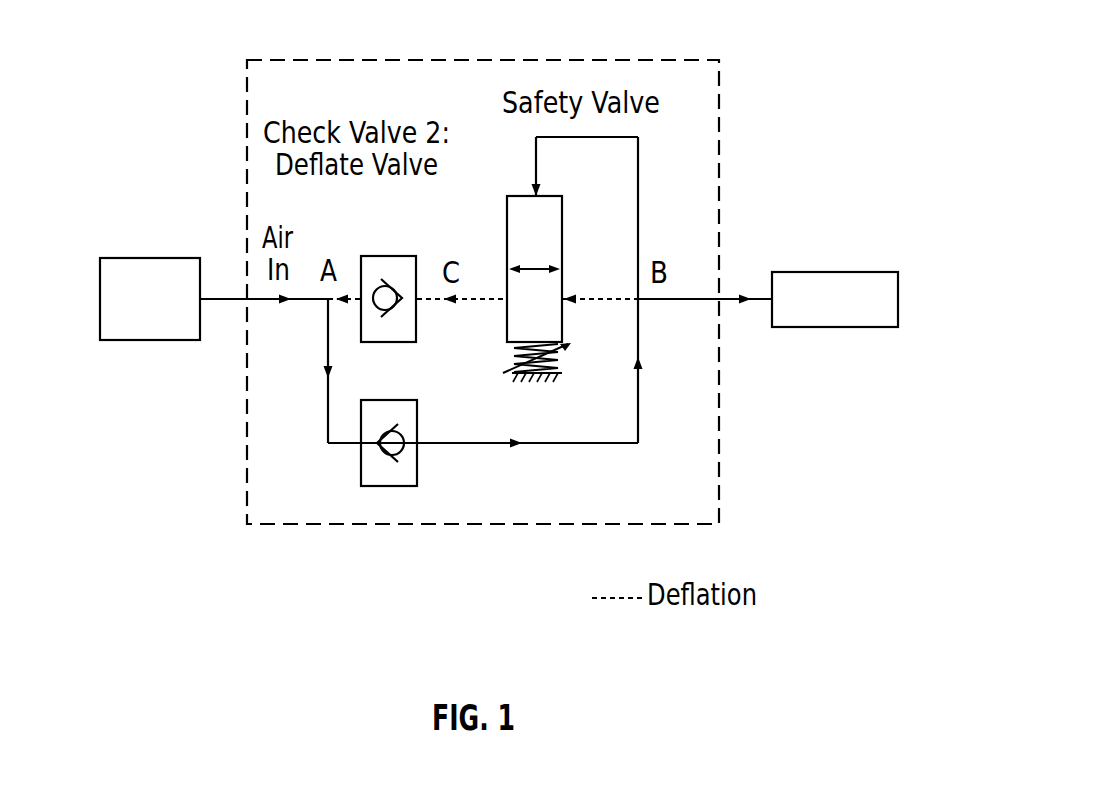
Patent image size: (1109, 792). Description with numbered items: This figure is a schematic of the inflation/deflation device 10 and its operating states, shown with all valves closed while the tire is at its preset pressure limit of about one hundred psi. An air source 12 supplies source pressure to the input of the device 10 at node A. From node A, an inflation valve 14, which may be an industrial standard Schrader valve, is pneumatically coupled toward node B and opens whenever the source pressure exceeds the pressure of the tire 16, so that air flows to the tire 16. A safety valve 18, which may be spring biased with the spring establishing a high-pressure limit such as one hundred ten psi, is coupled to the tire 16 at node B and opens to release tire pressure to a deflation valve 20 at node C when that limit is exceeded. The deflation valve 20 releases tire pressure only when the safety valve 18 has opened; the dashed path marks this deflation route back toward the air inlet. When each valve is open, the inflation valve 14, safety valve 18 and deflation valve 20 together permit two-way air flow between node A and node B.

The inflation/deflation device 10 is at (715, 44).
The air source 12 is at (153, 257).
The inflation valve 14 is at (417, 456).
The tire 16 is at (835, 272).
The safety valve 18 is at (562, 232).
The deflation valve 20 is at (388, 256).